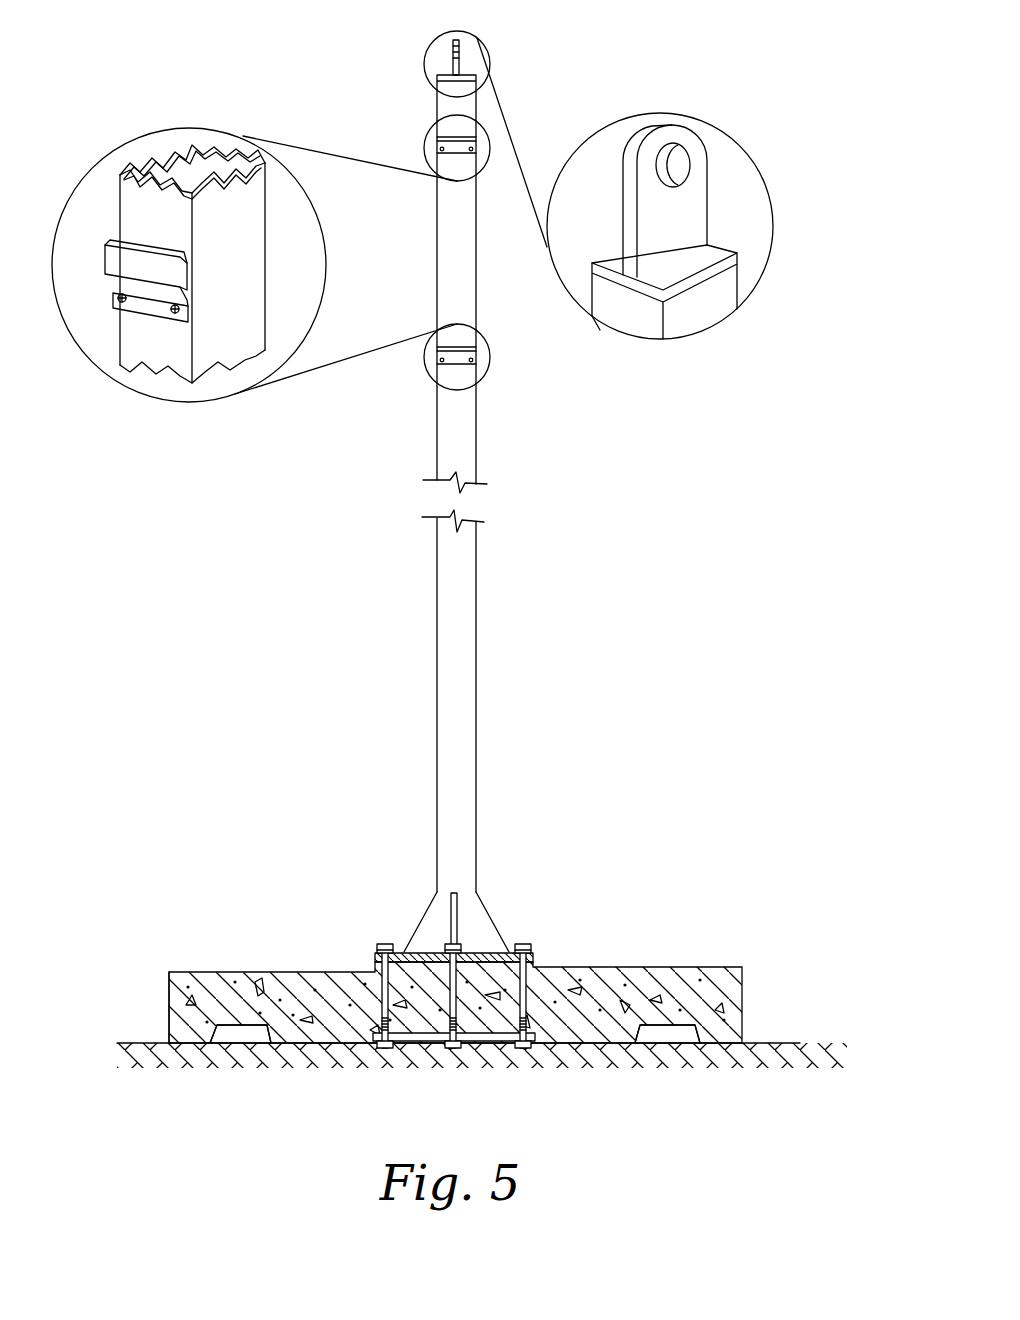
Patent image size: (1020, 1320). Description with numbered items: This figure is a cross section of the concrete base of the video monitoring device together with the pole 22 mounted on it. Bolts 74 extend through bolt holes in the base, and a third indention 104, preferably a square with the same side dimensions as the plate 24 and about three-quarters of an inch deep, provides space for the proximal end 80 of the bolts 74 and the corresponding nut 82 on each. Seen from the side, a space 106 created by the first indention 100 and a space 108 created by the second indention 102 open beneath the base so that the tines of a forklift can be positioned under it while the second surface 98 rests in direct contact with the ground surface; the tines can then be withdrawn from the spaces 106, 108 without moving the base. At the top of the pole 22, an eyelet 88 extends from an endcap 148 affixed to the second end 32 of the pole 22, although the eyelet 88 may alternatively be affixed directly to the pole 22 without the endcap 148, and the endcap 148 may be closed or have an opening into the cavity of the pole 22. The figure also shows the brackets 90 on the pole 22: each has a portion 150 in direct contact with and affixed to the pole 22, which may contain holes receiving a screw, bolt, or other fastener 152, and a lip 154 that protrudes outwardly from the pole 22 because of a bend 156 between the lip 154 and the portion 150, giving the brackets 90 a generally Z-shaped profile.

The pole 22 is at (265, 247).
The plate 24 is at (415, 952).
The second end 32 is at (752, 288).
The bolts 74 is at (535, 967).
The proximal end 80 is at (528, 1049).
The nut 82 is at (517, 1035).
The eyelet 88 is at (661, 226).
The brackets 90 is at (437, 147).
The second surface 98 is at (320, 1046).
The first indention 100 is at (665, 1025).
The second indention 102 is at (248, 1025).
The third indention 104 is at (477, 1040).
The space 106 is at (672, 1040).
The space 108 is at (235, 1038).
The endcap 148 is at (713, 248).
The portion 150 is at (189, 311).
The fastener 152 is at (174, 312).
The lip 154 is at (183, 265).
The bend 156 is at (192, 288).